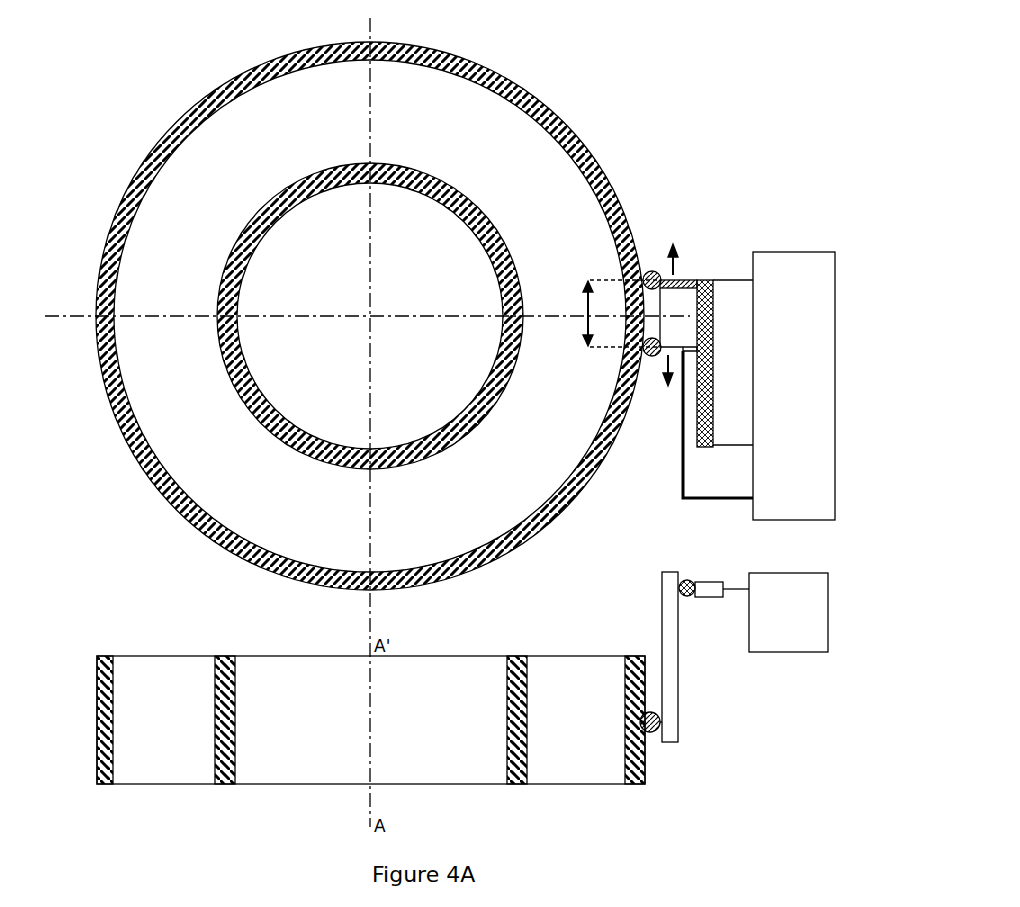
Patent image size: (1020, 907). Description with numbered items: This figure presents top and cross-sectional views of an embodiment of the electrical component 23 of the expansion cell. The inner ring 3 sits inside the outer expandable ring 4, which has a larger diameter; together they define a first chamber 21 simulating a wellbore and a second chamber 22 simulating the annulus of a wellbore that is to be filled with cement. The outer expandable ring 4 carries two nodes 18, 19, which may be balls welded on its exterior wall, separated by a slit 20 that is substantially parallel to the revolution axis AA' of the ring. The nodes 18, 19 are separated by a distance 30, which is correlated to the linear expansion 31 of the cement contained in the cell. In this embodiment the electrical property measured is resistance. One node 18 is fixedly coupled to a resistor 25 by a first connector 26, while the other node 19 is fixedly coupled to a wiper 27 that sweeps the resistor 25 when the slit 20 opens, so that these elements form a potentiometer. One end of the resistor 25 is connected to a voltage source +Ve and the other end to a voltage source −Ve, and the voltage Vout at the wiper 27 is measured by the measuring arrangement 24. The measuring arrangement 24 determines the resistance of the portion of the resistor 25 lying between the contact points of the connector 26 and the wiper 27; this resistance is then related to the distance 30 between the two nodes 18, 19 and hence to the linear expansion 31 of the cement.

The inner ring 3 is at (432, 176).
The outer expandable ring 4 is at (540, 101).
The node 18 is at (652, 270).
The node 19 is at (652, 357).
The slit 20 is at (636, 318).
The first chamber 21 is at (330, 247).
The second chamber 22 is at (275, 138).
The electrical component 23 is at (730, 245).
The measuring arrangement 24 is at (766, 452).
The resistor 25 is at (712, 330).
The first connector 26 is at (680, 280).
The wiper 27 is at (683, 440).
The distance 30 is at (615, 315).
The linear expansion 31 is at (608, 492).